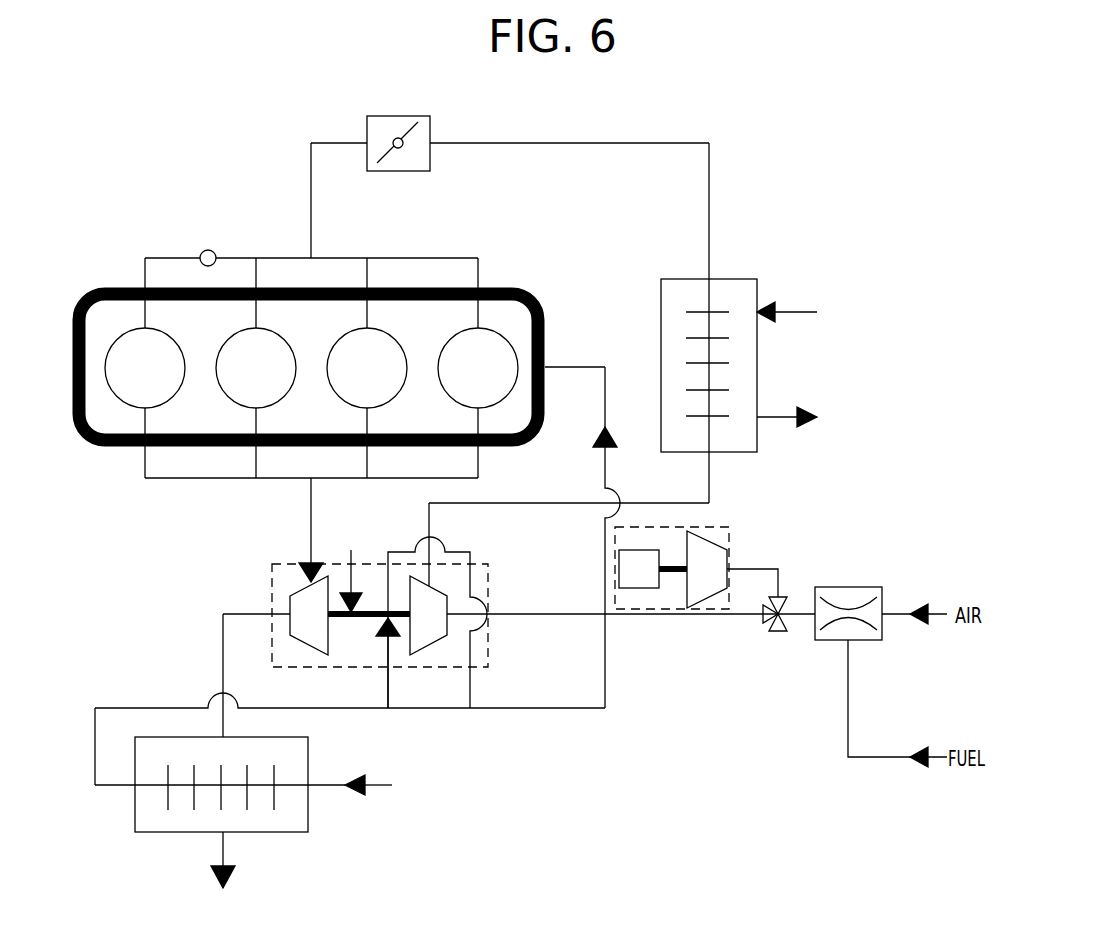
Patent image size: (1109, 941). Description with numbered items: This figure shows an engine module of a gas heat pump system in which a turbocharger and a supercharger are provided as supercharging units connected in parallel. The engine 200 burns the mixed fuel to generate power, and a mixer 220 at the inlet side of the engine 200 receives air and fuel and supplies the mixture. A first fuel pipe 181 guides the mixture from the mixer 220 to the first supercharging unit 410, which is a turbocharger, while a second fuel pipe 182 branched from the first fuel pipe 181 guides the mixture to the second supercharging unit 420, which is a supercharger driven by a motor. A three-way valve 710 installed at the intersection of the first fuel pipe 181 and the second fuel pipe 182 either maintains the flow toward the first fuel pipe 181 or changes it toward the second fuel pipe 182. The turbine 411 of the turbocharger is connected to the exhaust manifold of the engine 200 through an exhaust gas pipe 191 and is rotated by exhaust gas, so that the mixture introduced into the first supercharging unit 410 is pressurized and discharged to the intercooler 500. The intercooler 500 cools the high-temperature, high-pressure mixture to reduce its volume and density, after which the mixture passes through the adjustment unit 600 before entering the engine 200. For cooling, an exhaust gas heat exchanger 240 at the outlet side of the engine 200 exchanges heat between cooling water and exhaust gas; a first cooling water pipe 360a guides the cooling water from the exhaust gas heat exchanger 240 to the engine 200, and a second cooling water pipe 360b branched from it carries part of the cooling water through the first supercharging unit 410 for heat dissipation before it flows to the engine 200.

The engine 200 is at (111, 447).
The adjustment unit 600 is at (398, 115).
The intercooler 500 is at (732, 278).
The exhaust gas pipe 191 is at (311, 519).
The first supercharging unit 410 is at (393, 616).
The turbine 411 is at (310, 634).
The second supercharging unit 420 is at (615, 549).
The second fuel pipe 182 is at (751, 568).
The first fuel pipe 181 is at (651, 614).
The three-way valve 710 is at (777, 631).
The mixer 220 is at (848, 586).
The first cooling water pipe 360a is at (94, 785).
The second cooling water pipe 360b is at (389, 688).
The exhaust gas heat exchanger 240 is at (266, 834).